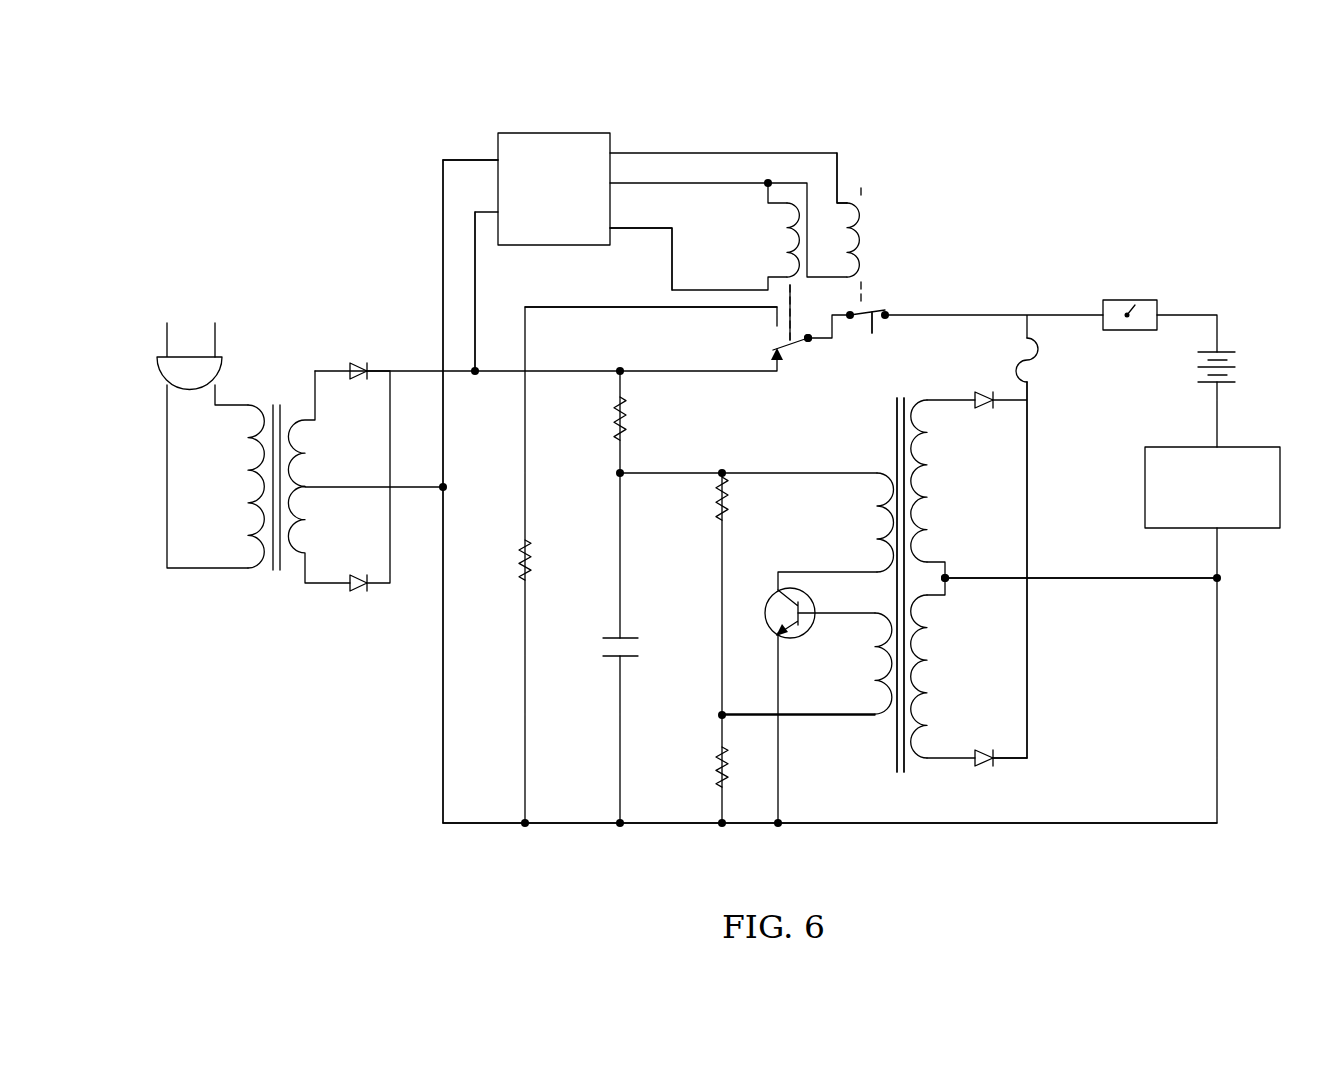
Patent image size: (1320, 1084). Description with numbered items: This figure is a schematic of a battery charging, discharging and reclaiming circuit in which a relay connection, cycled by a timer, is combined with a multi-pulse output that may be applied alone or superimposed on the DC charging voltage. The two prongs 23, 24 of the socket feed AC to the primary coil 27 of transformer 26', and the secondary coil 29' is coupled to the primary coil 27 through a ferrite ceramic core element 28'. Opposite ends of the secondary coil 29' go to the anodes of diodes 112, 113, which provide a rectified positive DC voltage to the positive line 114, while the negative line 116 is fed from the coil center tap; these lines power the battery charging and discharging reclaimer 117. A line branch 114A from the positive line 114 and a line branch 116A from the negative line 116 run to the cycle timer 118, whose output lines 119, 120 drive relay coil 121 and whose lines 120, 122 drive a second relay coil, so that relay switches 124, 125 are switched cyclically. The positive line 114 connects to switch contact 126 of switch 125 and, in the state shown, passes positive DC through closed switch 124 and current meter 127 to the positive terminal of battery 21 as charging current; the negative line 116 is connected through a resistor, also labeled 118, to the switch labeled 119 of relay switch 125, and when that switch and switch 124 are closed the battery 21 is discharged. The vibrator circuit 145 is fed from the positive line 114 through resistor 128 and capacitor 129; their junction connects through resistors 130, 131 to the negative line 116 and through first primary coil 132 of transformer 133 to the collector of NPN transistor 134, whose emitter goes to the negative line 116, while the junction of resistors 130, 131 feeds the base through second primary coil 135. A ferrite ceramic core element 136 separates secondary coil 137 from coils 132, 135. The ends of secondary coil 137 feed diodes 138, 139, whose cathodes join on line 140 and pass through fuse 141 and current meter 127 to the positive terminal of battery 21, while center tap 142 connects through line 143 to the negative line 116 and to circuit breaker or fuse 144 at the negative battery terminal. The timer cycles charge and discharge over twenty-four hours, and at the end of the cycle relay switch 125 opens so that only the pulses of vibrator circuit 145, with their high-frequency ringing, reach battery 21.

The battery 21 is at (1237, 362).
The prong 23 is at (167, 322).
The prong 24 is at (222, 333).
The transformer 26' is at (268, 452).
The primary coil 27 is at (250, 505).
The ferrite ceramic core element 28' is at (271, 498).
The secondary coil 29' is at (365, 561).
The diode 112 is at (345, 371).
The diode 113 is at (350, 592).
The positive line 114 is at (508, 373).
The line branch 114A is at (476, 296).
The negative line 116 is at (443, 775).
The line branch 116A is at (443, 203).
The battery charging and discharging reclaimer 117 is at (559, 844).
The cycle timer 118 is at (592, 131).
The timer output line 119 is at (838, 178).
The timer output line 120 is at (766, 182).
The relay coil 121 is at (868, 233).
The timer output line 122 is at (652, 229).
The relay switch 124 is at (870, 335).
The relay switch 125 is at (795, 344).
The switch contact 126 is at (792, 363).
The current meter 127 is at (1135, 305).
The resistor 128 is at (614, 413).
The capacitor 129 is at (620, 630).
The resistor 130 is at (715, 500).
The resistor 131 is at (715, 765).
The first primary coil 132 is at (867, 506).
The transformer 133 is at (905, 394).
The NPN transistor 134 is at (784, 598).
The second primary coil 135 is at (866, 655).
The ferrite ceramic core element 136 is at (897, 765).
The secondary coil 137 is at (928, 500).
The diode 138 is at (985, 397).
The diode 139 is at (978, 752).
The line 140 is at (1030, 503).
The fuse 141 is at (1040, 348).
The center tap 142 is at (947, 576).
The line 143 is at (1097, 579).
The circuit breaker or fuse 144 is at (1145, 508).
The vibrator circuit 145 is at (1046, 761).